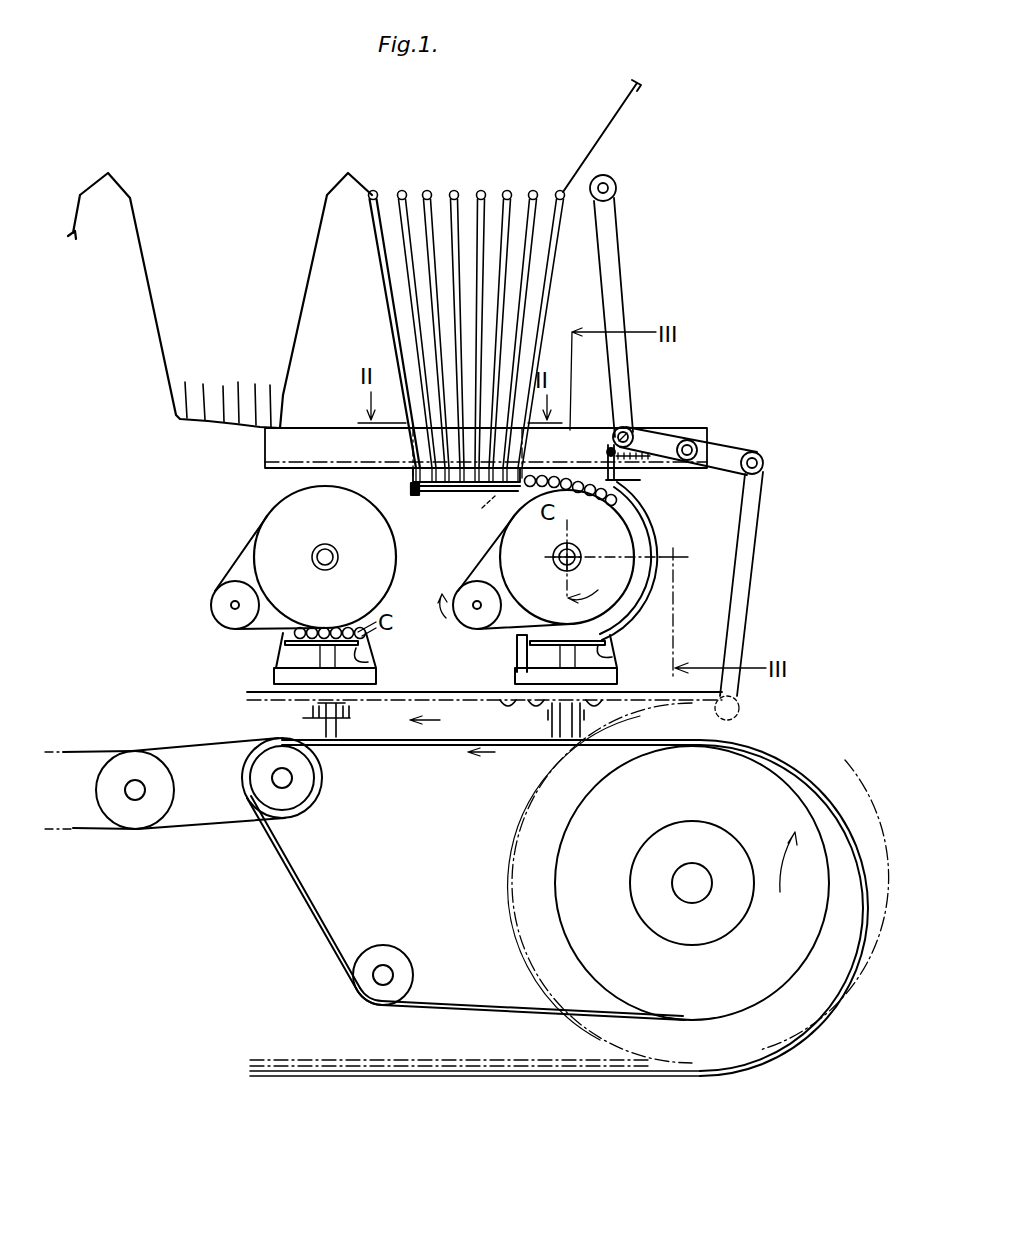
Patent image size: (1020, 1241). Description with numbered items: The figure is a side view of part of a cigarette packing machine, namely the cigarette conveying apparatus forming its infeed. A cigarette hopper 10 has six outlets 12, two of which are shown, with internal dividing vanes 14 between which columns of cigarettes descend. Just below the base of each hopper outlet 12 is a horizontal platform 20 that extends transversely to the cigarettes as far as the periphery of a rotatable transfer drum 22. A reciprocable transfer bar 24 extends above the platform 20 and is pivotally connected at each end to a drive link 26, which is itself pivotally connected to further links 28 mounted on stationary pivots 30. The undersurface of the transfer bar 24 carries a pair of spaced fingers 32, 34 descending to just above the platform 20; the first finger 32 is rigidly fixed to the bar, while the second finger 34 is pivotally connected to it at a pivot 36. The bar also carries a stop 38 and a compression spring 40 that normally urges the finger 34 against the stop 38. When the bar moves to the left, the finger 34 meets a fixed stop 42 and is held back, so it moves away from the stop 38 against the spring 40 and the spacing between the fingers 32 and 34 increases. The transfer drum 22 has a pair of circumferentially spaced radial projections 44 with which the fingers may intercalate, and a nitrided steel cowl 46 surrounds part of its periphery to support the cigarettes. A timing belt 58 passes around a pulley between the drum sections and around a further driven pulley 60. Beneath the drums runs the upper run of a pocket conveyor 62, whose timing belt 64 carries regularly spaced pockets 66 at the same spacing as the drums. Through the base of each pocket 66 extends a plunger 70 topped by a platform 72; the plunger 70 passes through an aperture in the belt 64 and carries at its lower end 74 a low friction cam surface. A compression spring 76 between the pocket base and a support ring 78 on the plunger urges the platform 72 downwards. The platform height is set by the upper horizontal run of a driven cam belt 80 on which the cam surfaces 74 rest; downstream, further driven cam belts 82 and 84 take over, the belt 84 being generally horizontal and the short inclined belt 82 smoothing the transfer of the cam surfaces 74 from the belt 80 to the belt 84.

The cigarette hopper 10 is at (292, 128).
The hopper outlet 12 is at (143, 319).
The internal dividing vanes 14 is at (429, 193).
The platform 20 is at (417, 488).
The transfer drum 22 is at (382, 570).
The transfer bar 24 is at (283, 451).
The drive link 26 is at (716, 444).
The further links 28 is at (612, 292).
The stationary pivots 30 is at (614, 180).
The first finger 32 is at (518, 468).
The second finger 34 is at (616, 478).
The pivot 36 is at (629, 428).
The stop 38 is at (606, 456).
The compression spring 40 is at (652, 455).
The fixed stop 42 is at (482, 508).
The radial projections 44 is at (505, 500).
The cowl 46 is at (655, 548).
The timing belt 58 is at (474, 547).
The driven pulley 60 is at (444, 605).
The pocket conveyor 62 is at (758, 1076).
The timing belt 64 is at (490, 690).
The pocket 66 is at (280, 656).
The plunger 70 is at (518, 658).
The platform 72 is at (370, 657).
The lower end with cam surface 74 is at (352, 740).
The compression spring 76 is at (532, 710).
The support ring 78 is at (583, 740).
The driven cam belt 80 is at (432, 746).
The inclined cam belt 82 is at (246, 746).
The horizontal cam belt 84 is at (92, 758).